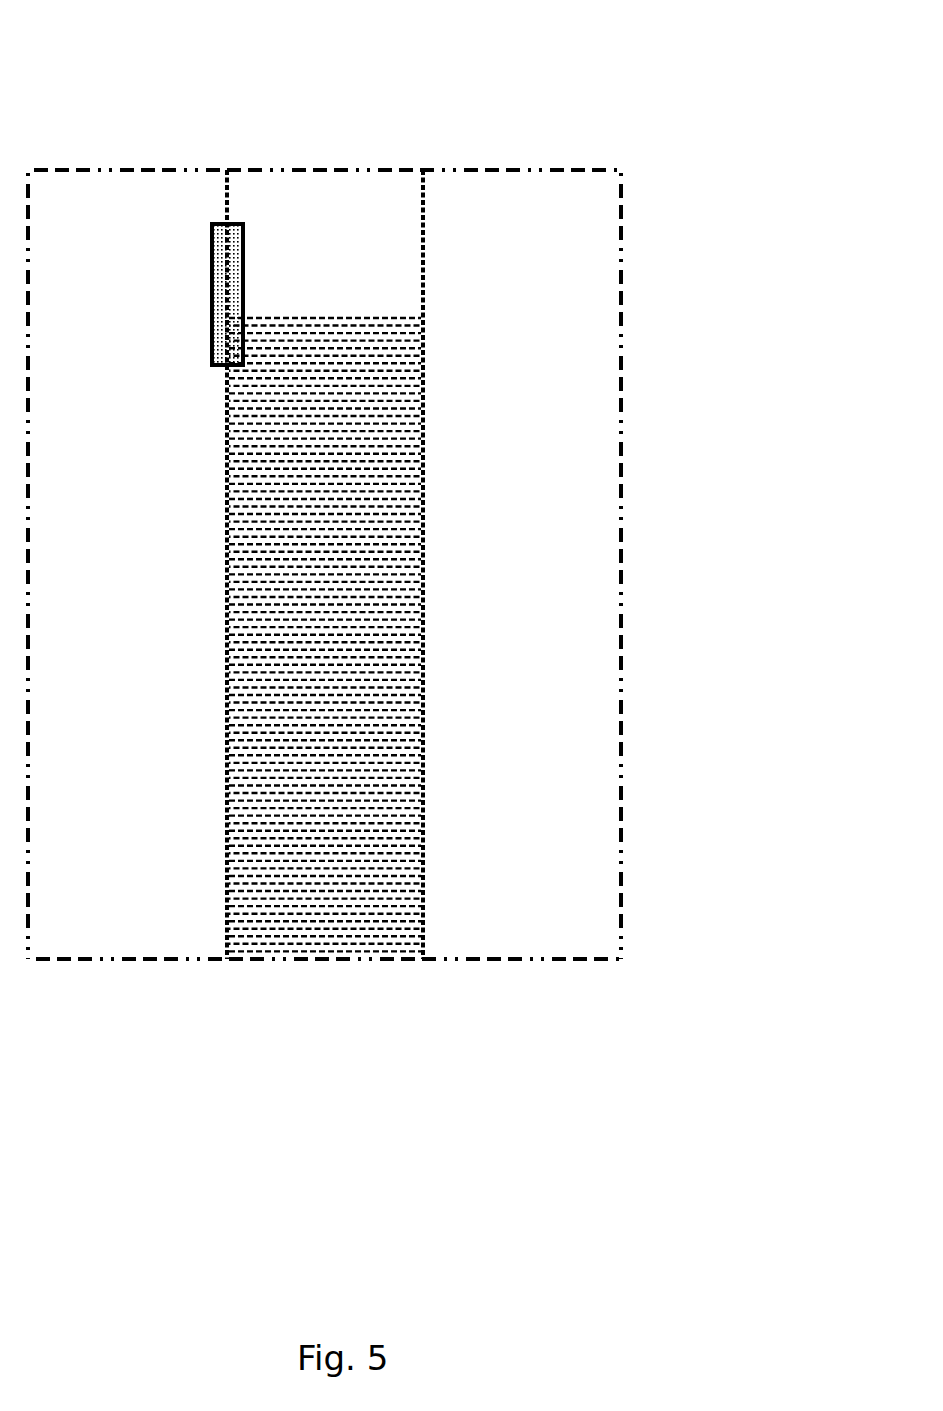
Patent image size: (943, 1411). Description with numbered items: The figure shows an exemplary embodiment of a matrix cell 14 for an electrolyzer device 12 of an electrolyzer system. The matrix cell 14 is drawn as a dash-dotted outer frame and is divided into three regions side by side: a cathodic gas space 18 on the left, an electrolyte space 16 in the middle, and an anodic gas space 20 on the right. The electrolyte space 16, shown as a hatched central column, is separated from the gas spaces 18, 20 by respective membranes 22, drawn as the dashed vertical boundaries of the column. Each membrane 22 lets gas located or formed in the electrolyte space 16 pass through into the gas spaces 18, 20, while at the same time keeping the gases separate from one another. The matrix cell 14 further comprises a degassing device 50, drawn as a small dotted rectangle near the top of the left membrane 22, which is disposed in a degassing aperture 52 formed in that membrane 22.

The electrolyzer device 12 is at (147, 50).
The matrix cell 14 is at (185, 128).
The electrolyte space 16 is at (333, 188).
The cathodic gas space 18 is at (88, 189).
The anodic gas space 20 is at (533, 200).
The membrane 22 is at (228, 497).
The degassing device 50 is at (210, 250).
The degassing aperture 52 is at (230, 368).